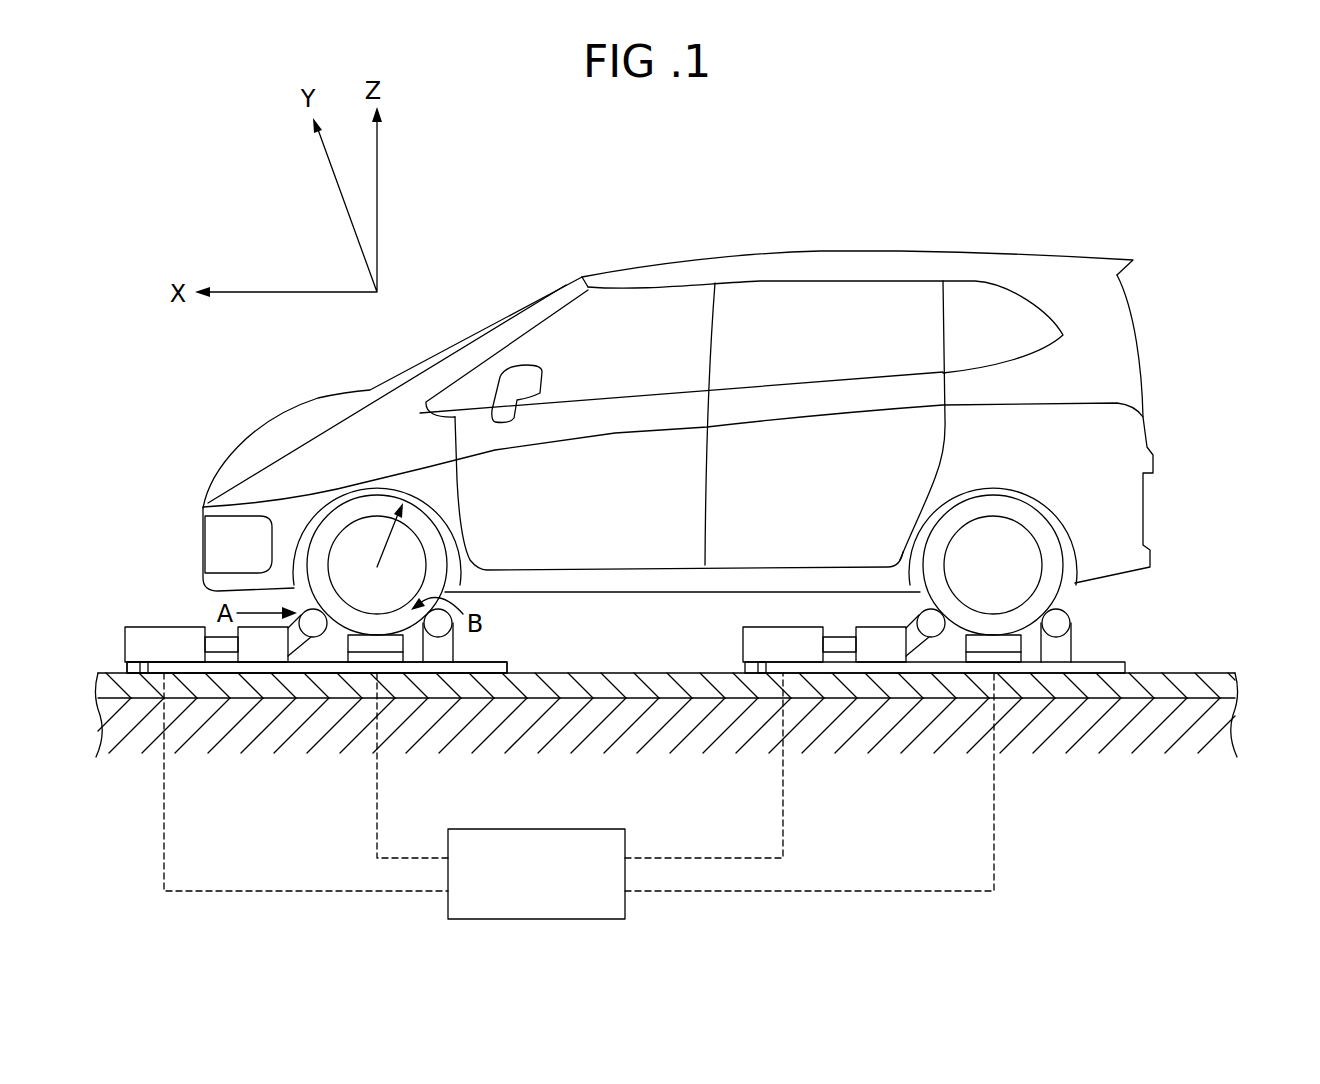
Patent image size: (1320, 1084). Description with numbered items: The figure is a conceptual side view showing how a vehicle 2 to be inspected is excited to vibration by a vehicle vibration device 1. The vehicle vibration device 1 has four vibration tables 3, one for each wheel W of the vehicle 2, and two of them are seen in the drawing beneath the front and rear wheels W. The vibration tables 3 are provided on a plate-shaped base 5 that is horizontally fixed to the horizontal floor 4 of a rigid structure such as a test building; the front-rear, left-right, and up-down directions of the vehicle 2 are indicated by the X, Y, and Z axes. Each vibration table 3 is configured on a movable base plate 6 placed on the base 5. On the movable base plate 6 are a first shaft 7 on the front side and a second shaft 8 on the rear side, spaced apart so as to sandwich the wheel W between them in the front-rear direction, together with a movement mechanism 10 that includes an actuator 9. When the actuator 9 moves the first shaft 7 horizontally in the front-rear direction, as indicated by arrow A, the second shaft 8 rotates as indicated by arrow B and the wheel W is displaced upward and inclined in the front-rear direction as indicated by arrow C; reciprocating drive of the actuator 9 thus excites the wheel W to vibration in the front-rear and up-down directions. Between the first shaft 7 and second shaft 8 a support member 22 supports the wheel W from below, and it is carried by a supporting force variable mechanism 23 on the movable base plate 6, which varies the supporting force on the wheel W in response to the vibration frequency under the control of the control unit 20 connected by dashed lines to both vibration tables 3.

The vehicle vibration device 1 is at (150, 548).
The vehicle 2 is at (673, 257).
The vibration table 3 is at (152, 696).
The floor 4 is at (1240, 741).
The base 5 is at (1240, 679).
The movable base plate 6 is at (146, 675).
The first shaft 7 is at (322, 638).
The second shaft 8 is at (447, 633).
The actuator 9 is at (190, 655).
The movement mechanism 10 is at (222, 667).
The control unit 20 is at (611, 919).
The support member 22 is at (410, 645).
The supporting force variable mechanism 23 is at (383, 660).
The wheel W is at (313, 560).